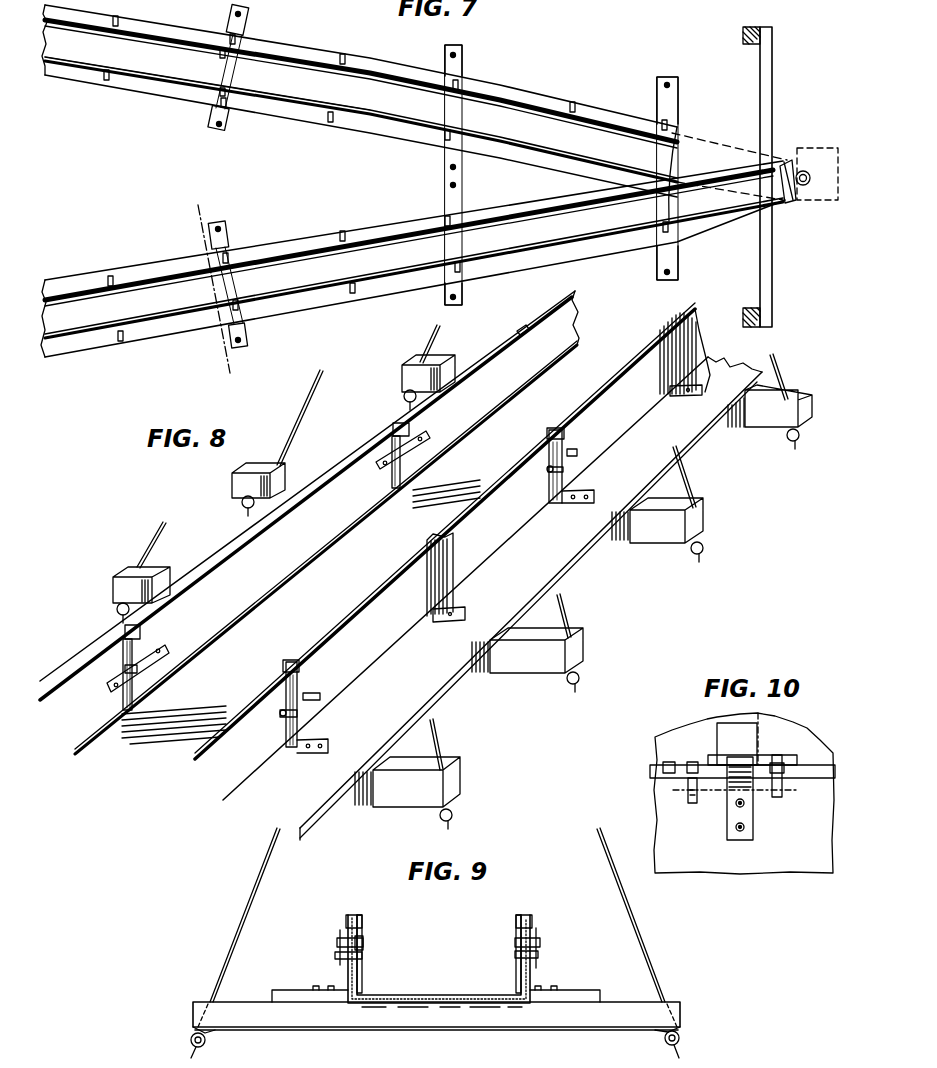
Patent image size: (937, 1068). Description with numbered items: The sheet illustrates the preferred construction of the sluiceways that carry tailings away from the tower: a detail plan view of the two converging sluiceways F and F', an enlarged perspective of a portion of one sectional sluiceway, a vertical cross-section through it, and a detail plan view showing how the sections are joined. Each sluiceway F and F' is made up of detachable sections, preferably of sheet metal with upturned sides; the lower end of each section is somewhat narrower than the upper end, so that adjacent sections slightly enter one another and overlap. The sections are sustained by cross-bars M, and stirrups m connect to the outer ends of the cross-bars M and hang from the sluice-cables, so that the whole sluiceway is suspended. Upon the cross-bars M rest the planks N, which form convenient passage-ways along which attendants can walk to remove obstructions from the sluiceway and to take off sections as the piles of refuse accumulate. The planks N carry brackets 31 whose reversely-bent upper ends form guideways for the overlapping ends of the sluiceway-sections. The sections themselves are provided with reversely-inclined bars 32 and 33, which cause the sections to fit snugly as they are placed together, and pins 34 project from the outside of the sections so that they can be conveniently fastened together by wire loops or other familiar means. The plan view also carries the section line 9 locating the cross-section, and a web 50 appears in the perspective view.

In FIG. 7, the section line 9- 9 is at (211, 290).
In FIG. 8, the bracket 31 is at (300, 677).
In FIG. 9, the bracket 31 is at (348, 920).
In FIG. 10, the bracket 31 is at (727, 792).
In FIG. 8, the reversely-inclined bar 32 is at (140, 662).
In FIG. 9, the reversely-inclined bar 32 is at (363, 941).
In FIG. 10, the reversely-inclined bar 32 is at (710, 755).
In FIG. 8, the reversely-inclined bar 33 is at (150, 667).
In FIG. 9, the reversely-inclined bar 33 is at (362, 956).
In FIG. 10, the reversely-inclined bar 33 is at (778, 758).
In FIG. 8, the pin 34 is at (297, 715).
In FIG. 9, the pin 34 is at (538, 941).
In FIG. 8, the web plate 50 is at (446, 575).
In FIG. 7, the sluiceway F is at (414, 113).
In FIG. 7, the sluiceway F' is at (413, 259).
In FIG. 7, the cross-bar M is at (241, 343).
In FIG. 8, the cross-bar M is at (707, 520).
In FIG. 9, the cross-bar M is at (415, 1025).
In FIG. 8, the stirrup m is at (565, 601).
In FIG. 9, the stirrup m is at (236, 958).
In FIG. 7, the plank N is at (287, 241).
In FIG. 8, the plank N is at (229, 543).
In FIG. 9, the plank N is at (600, 975).
In FIG. 10, the plank N is at (744, 793).